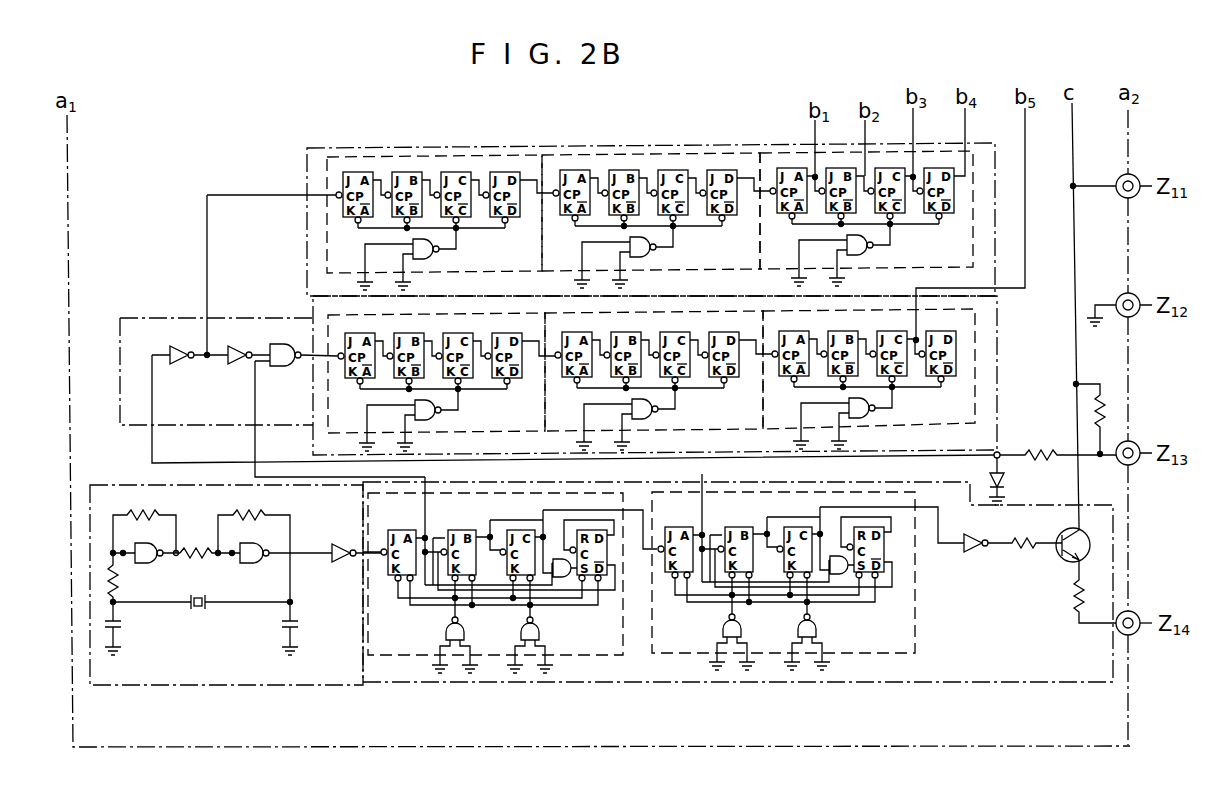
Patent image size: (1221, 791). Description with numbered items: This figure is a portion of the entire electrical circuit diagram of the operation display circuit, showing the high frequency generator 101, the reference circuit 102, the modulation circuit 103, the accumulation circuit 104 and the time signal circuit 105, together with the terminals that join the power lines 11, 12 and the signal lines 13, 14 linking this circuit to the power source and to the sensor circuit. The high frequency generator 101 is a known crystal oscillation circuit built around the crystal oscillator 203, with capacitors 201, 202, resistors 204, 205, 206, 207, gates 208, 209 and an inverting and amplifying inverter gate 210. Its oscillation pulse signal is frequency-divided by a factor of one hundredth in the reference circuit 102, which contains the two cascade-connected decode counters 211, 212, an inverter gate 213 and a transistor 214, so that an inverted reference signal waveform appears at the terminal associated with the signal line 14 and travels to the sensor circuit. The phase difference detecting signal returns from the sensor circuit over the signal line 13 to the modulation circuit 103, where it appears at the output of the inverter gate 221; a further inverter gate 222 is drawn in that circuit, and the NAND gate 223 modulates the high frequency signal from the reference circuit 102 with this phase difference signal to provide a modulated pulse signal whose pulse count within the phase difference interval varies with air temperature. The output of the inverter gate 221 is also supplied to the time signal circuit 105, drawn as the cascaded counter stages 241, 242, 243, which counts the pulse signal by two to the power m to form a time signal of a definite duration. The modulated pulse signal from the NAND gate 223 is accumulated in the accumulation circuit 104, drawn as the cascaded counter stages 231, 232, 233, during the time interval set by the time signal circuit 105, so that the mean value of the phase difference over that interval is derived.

The high frequency generator 101 is at (230, 690).
The reference circuit 102 is at (595, 688).
The modulation circuit 103 is at (172, 312).
The accumulation circuit 104 is at (997, 386).
The time signal circuit 105 is at (306, 171).
The capacitor 201 is at (124, 632).
The capacitor 202 is at (280, 630).
The crystal oscillator 203 is at (198, 610).
The resistor 204 is at (120, 604).
The resistor 205 is at (140, 512).
The resistor 206 is at (205, 560).
The resistor 207 is at (240, 512).
The gate 208 is at (150, 562).
The gate 209 is at (258, 562).
The inverting and amplifying inverter gate 210 is at (344, 562).
The decode counter 211 is at (637, 645).
The decode counter 212 is at (903, 650).
The inverter gate 213 is at (978, 553).
The transistor 214 is at (1070, 553).
The inverter gate 221 is at (182, 360).
The inverter 222 is at (238, 364).
The NAND gate 223 is at (288, 366).
The decade counter stage 231 is at (537, 430).
The decade counter stage 232 is at (735, 430).
The decade counter stage 233 is at (978, 420).
The decade counter stage 241 is at (447, 156).
The decade counter stage 242 is at (653, 154).
The decade counter stage 243 is at (786, 150).
The power line 11 is at (1120, 180).
The power line 12 is at (1120, 298).
The signal line 13 is at (1118, 442).
The signal line 14 is at (1120, 634).